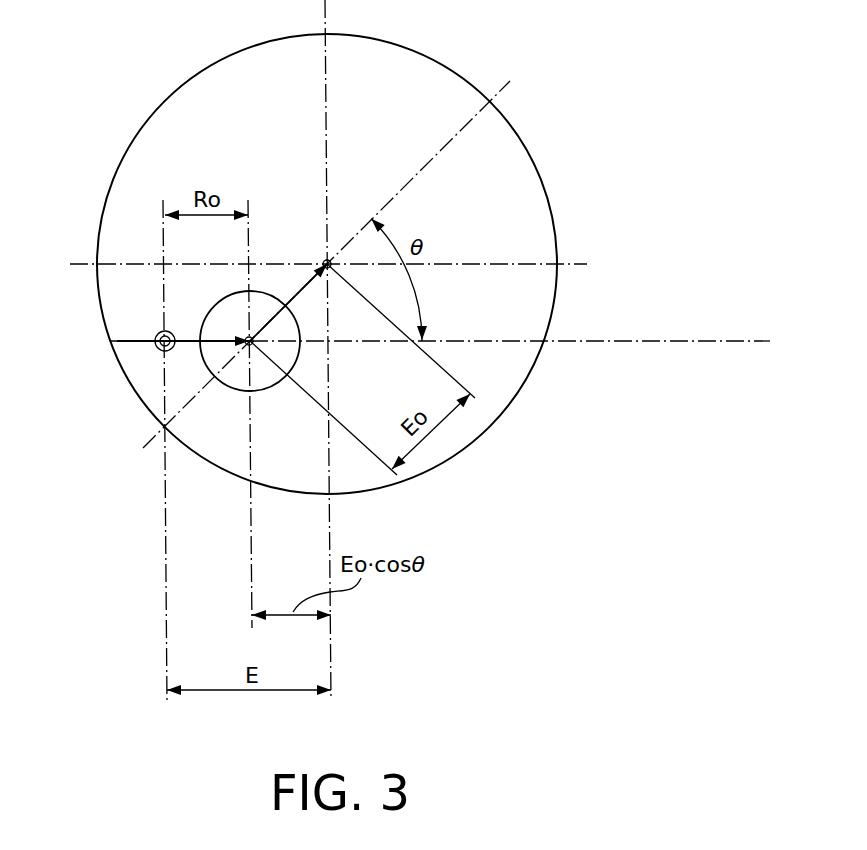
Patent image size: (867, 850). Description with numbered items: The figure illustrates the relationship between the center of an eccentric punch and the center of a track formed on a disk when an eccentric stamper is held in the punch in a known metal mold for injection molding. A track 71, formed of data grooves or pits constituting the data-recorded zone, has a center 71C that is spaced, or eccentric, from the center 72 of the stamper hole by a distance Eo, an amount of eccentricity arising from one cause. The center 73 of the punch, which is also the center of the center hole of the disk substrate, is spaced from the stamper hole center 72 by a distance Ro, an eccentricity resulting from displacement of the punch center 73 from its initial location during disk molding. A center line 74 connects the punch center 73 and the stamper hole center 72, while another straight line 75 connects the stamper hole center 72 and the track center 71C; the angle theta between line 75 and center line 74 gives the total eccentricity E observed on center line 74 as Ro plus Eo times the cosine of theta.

The track 71 is at (559, 238).
The center of track 71C is at (326, 263).
The center of stamper hole 72 is at (252, 344).
The center of punch 73 is at (156, 351).
The center line 74 is at (605, 341).
The straight line 75 is at (423, 169).